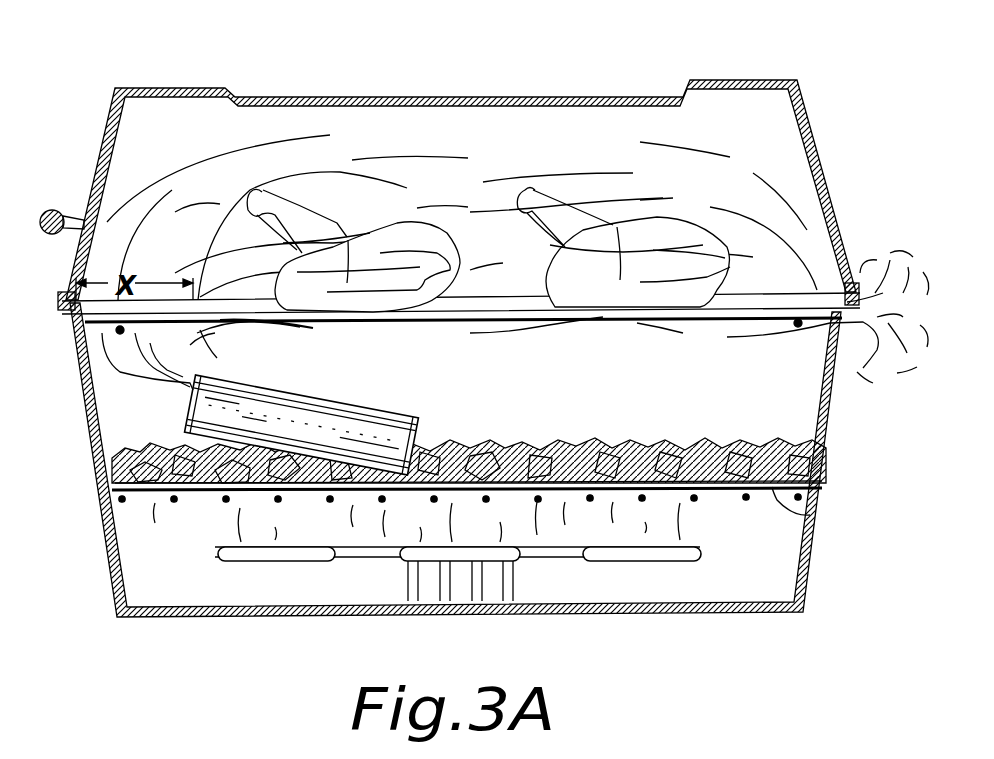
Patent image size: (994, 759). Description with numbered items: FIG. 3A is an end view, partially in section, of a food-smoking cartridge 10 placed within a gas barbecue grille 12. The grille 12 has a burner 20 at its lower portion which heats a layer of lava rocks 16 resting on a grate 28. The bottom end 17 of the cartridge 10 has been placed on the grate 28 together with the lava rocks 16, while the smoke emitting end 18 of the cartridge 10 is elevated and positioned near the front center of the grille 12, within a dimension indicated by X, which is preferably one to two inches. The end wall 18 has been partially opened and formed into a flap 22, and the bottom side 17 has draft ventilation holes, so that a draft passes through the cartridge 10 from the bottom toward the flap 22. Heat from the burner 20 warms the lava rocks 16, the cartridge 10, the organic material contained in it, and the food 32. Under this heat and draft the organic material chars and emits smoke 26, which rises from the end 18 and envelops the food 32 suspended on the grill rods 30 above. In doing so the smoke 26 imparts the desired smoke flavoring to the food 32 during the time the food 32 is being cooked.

The food-smoking cartridge 10 is at (347, 413).
The gas barbecue grille 12 is at (95, 443).
The lava rocks 16 is at (160, 492).
The bottom end 17 is at (298, 470).
The smoke emitting end wall 18 is at (183, 422).
The burner 20 is at (703, 552).
The flap 22 is at (183, 393).
The smoke 26 is at (207, 352).
The grate 28 is at (810, 515).
The grill rods 30 is at (704, 324).
The food 32 is at (383, 230).